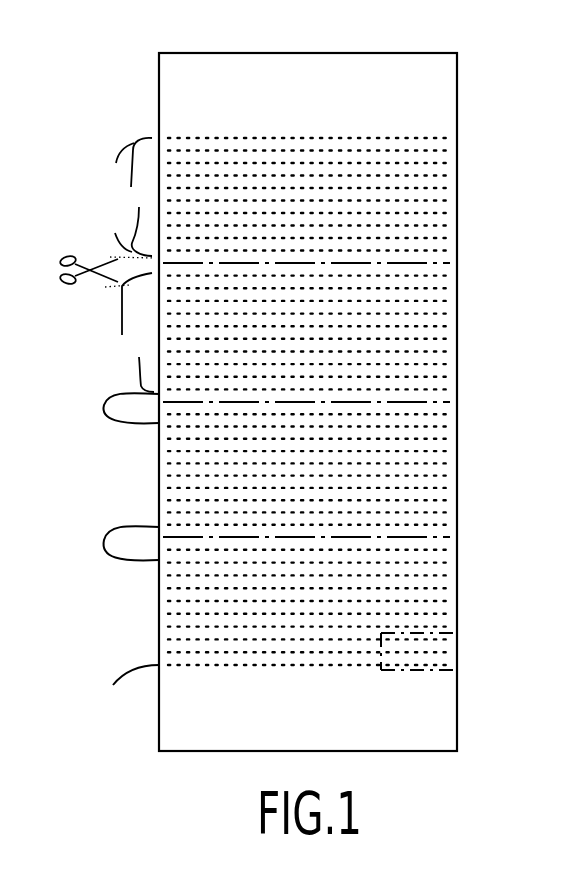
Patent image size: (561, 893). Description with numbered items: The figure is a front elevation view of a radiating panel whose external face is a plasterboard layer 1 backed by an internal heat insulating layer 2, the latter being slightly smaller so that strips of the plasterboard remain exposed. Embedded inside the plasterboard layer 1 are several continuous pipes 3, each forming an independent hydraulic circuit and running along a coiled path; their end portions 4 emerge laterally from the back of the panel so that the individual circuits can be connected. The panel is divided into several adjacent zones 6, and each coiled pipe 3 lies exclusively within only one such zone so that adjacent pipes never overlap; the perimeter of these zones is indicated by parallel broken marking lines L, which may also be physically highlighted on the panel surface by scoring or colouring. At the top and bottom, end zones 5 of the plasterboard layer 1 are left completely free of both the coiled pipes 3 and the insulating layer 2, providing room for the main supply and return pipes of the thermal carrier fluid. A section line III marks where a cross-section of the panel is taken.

The plasterboard layer 1 is at (473, 106).
The continuous pipes 3 is at (212, 574).
The end portions 4 is at (134, 265).
The zones 5 is at (328, 104).
The adjacent zones 6 is at (425, 185).
The marking lines L is at (420, 398).
The section line III- III is at (518, 670).
The heat insulating layer 2 is at (107, 271).